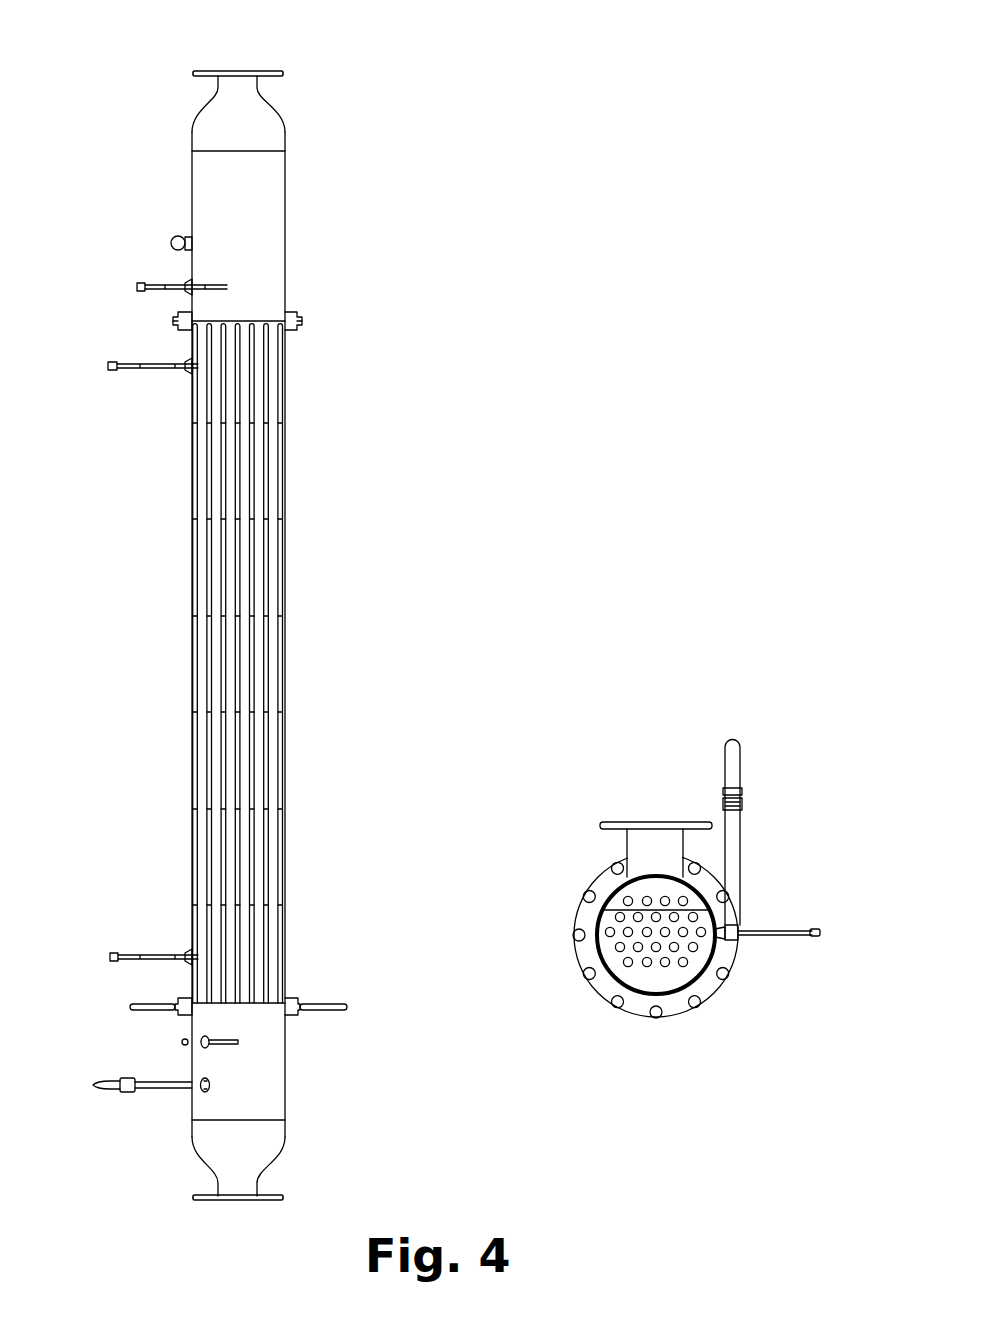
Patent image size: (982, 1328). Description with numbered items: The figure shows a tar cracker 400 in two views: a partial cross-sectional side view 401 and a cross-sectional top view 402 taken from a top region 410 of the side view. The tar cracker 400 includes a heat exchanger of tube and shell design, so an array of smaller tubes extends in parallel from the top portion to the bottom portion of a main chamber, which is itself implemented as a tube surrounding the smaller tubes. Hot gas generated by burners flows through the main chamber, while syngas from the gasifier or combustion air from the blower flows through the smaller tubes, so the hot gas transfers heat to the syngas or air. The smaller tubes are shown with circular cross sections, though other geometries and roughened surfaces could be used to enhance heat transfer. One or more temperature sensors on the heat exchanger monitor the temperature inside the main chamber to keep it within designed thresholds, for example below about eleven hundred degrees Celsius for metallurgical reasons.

The tar cracker 400 is at (707, 134).
The cross-sectional side view 401 is at (364, 107).
The cross-sectional top view 402 is at (698, 718).
The top region 410 is at (262, 71).